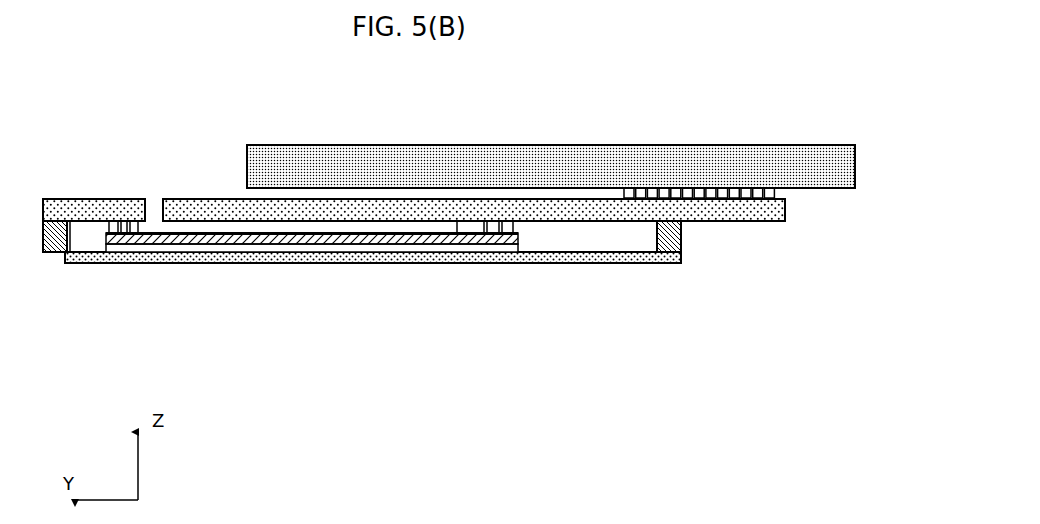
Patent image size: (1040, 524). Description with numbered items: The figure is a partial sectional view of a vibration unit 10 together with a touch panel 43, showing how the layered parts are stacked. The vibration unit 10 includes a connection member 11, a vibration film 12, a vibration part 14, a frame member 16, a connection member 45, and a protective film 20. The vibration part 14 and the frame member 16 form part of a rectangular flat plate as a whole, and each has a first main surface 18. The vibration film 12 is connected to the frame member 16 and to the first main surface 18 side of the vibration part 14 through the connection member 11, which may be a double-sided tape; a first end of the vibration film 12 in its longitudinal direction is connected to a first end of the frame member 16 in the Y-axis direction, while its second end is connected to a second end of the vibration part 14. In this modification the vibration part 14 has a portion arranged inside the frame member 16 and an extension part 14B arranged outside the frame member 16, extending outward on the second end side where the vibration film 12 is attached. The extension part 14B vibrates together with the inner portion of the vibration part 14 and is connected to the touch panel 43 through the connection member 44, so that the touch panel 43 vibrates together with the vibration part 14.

The vibration unit 10 is at (321, 293).
The connection member 11 is at (149, 244).
The vibration film 12 is at (240, 244).
The vibration part 14 is at (458, 228).
The extension part 14B is at (762, 222).
The frame member 16 is at (84, 253).
The first main surface 18 is at (340, 228).
The protective film 20 is at (397, 258).
The touch panel 43 is at (362, 143).
The connection member 44 is at (713, 187).
The connection member 45 is at (137, 235).